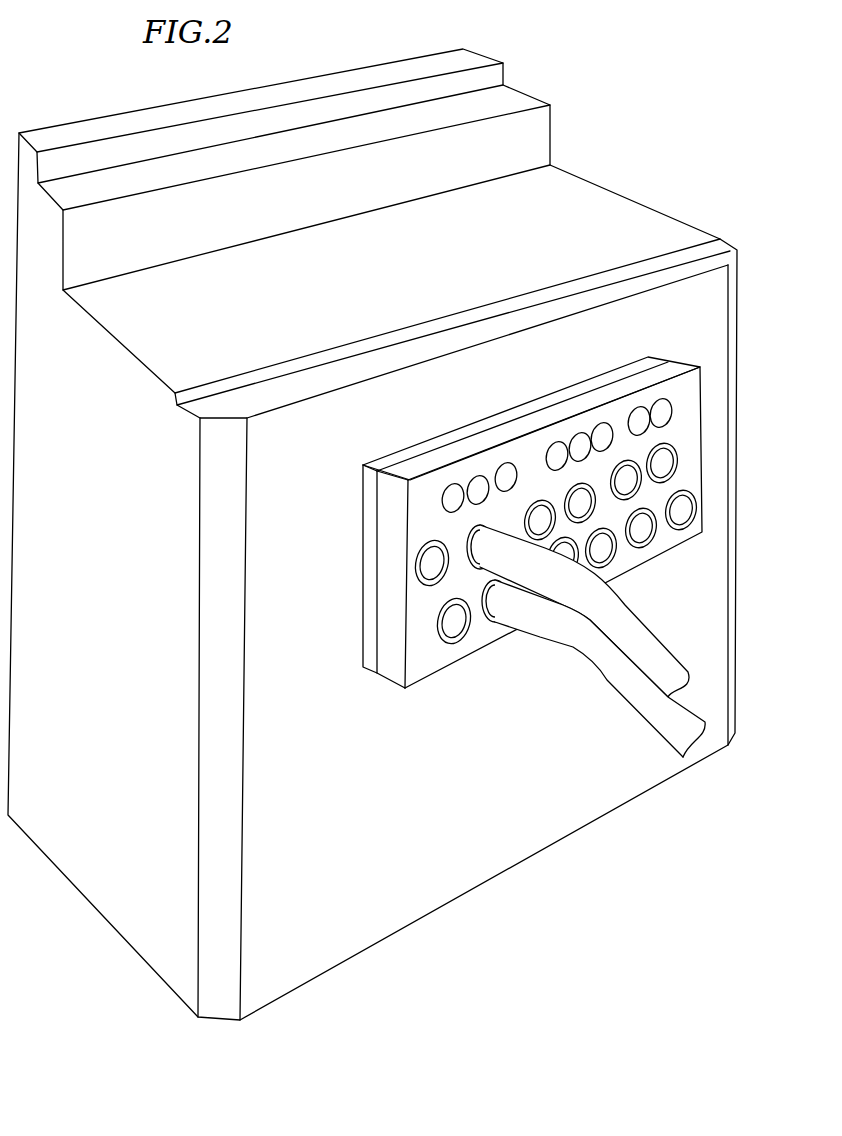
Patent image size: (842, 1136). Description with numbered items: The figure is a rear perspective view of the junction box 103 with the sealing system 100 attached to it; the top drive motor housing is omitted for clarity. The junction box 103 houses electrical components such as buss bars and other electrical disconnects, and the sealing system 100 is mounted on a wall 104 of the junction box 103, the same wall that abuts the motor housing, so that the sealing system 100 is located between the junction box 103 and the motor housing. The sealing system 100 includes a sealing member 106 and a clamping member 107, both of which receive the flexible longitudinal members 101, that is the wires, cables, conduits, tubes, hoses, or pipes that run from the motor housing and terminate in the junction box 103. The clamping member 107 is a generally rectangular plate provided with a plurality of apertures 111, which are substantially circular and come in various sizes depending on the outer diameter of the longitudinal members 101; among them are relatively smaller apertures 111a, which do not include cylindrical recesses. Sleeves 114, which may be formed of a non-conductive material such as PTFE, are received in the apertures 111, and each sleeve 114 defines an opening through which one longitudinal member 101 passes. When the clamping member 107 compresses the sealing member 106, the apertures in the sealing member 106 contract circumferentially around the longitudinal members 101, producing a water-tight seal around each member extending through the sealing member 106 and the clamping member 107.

The sealing system 100 is at (378, 707).
The flexible longitudinal members 101 is at (670, 721).
The junction box 103 is at (628, 159).
The wall 104 is at (685, 314).
The sealing member 106 is at (427, 447).
The clamping member 107 is at (413, 670).
The apertures 111 is at (432, 565).
The relatively smaller apertures 111a is at (506, 476).
The sleeves 114 is at (456, 582).